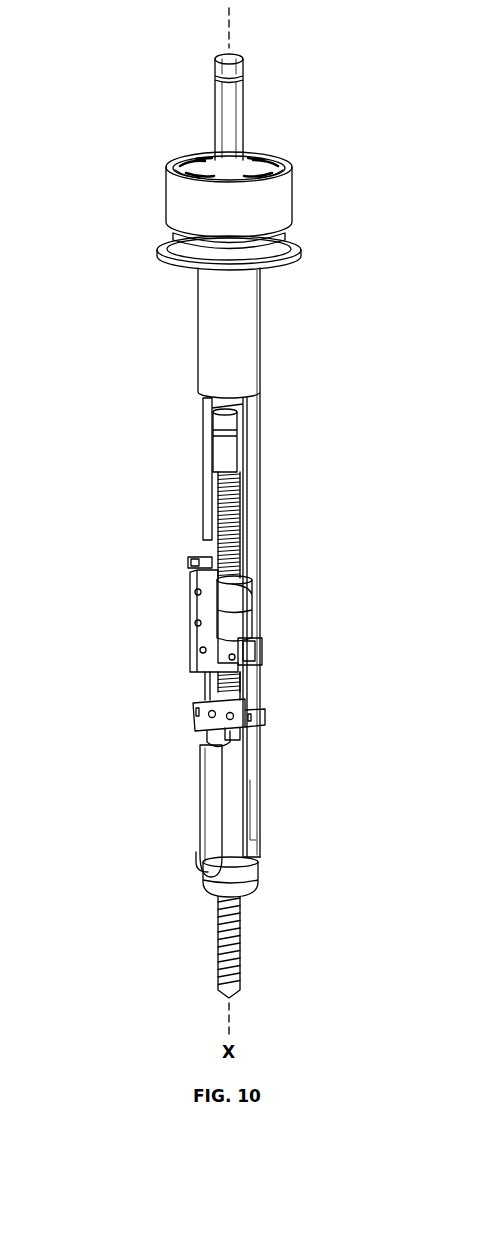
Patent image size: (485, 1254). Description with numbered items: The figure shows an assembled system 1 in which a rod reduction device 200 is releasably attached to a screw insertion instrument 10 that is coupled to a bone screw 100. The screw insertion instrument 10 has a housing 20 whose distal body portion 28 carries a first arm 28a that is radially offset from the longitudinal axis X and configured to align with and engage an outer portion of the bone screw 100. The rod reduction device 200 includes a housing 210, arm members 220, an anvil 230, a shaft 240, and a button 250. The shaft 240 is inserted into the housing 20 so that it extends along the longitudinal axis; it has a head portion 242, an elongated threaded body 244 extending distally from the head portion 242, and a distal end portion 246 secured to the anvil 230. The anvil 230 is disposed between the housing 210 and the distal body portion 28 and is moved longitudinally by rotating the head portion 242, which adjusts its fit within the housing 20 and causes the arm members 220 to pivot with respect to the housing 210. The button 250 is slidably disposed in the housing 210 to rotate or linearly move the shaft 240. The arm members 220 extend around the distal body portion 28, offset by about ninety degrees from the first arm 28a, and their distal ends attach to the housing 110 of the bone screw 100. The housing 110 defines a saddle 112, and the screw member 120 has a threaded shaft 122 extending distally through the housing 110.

The system 1 is at (335, 70).
The screw insertion instrument 10 is at (130, 163).
The housing 20 is at (260, 405).
The distal body portion 28 is at (212, 743).
The first arm 28a is at (212, 807).
The bone screw 100 is at (181, 911).
The housing 110 is at (258, 882).
The saddle 112 is at (212, 872).
The screw member 120 is at (252, 963).
The threaded shaft 122 is at (220, 953).
The rod reduction device 200 is at (136, 604).
The housing 210 is at (205, 628).
The arm members 220 is at (205, 692).
The anvil 230 is at (215, 722).
The shaft 240 is at (218, 477).
The head portion 242 is at (222, 450).
The elongated threaded body 244 is at (222, 523).
The distal end portion 246 is at (230, 697).
The button 250 is at (193, 557).